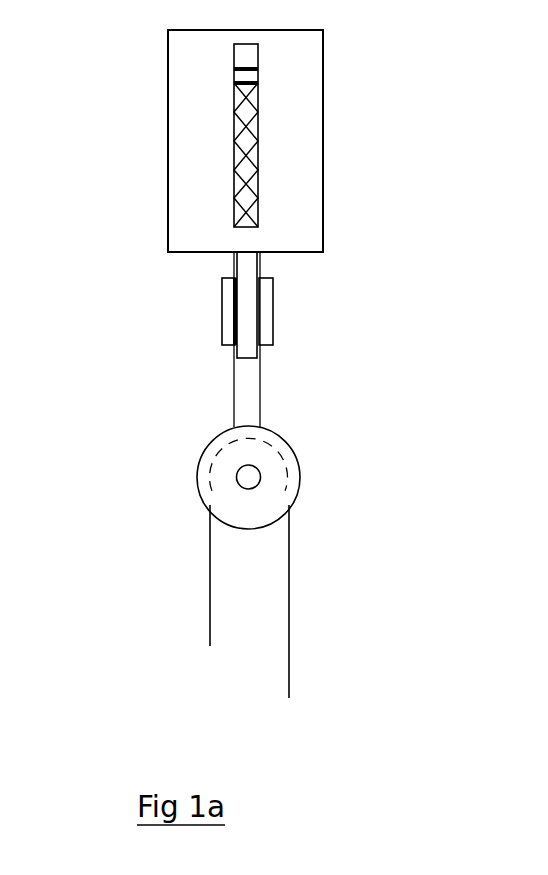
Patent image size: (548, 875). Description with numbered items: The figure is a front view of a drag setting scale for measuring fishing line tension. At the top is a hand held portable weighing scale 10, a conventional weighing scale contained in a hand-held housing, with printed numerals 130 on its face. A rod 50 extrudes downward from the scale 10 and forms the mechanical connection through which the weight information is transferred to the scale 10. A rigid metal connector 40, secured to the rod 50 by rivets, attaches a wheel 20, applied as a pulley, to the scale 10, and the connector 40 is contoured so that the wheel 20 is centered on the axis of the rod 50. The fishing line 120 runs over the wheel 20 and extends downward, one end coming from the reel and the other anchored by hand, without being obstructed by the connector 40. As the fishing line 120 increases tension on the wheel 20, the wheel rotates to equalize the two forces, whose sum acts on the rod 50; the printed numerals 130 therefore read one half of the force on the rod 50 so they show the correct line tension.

The hand held portable weighing scale 10 is at (155, 125).
The printed numerals 130 is at (297, 121).
The rod 50 is at (222, 268).
The connector 40 is at (222, 387).
The wheel 20 is at (183, 465).
The fishing line 120 is at (302, 577).